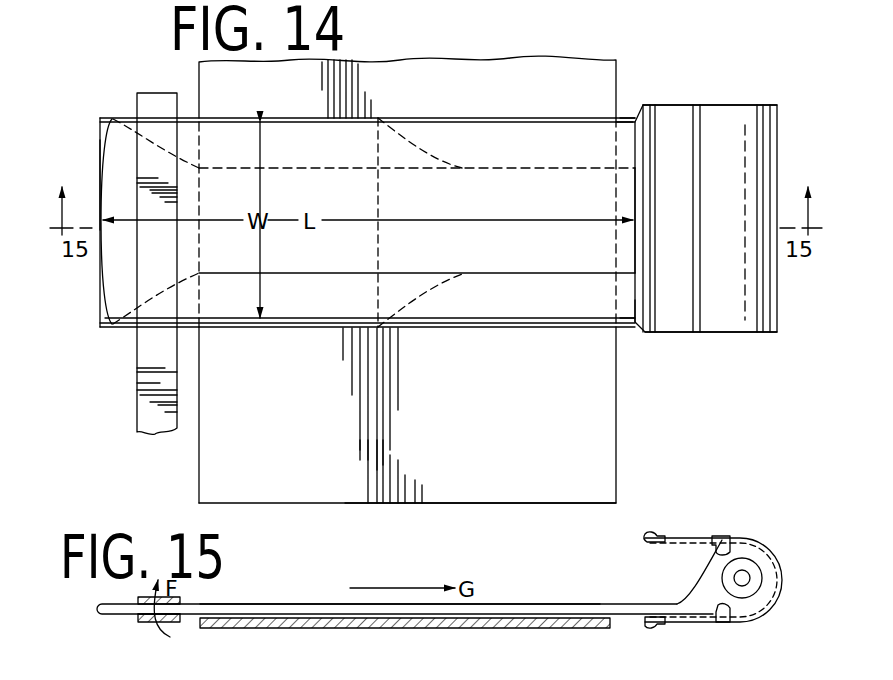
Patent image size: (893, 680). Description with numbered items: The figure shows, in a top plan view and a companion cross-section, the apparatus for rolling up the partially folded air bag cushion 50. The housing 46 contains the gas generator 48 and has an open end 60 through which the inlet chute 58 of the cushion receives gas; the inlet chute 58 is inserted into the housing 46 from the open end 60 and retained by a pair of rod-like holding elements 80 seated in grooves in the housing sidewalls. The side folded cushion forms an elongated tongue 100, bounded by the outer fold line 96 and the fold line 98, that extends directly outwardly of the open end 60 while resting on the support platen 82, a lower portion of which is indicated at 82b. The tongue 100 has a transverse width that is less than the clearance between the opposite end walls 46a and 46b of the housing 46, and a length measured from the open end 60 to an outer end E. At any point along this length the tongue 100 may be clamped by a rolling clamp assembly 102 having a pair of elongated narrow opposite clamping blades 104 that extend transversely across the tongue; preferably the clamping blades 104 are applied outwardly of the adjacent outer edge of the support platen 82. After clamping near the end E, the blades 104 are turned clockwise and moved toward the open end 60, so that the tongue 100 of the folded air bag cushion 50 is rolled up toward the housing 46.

In FIG. 14, the housing 46 is at (778, 135).
In FIG. 15, the housing 46 is at (776, 558).
In FIG. 14, the end wall of housing 46a is at (712, 105).
In FIG. 14, the end wall of housing 46b is at (730, 333).
In FIG. 15, the gas generator 48 is at (762, 580).
In FIG. 14, the air bag cushion 50 is at (540, 337).
In FIG. 15, the air bag cushion 50 is at (507, 600).
In FIG. 14, the inlet chute 58 is at (636, 122).
In FIG. 15, the inlet chute 58 is at (700, 585).
In FIG. 14, the open end of housing 60 is at (625, 324).
In FIG. 15, the open end of housing 60 is at (648, 535).
In FIG. 15, the rod-like holding elements 80 is at (720, 536).
In FIG. 14, the support platen 82 is at (199, 448).
In FIG. 15, the support platen 82 is at (398, 629).
In FIG. 14, the panel bottom edge 82b is at (343, 503).
In FIG. 14, the outer fold line 96 is at (473, 118).
In FIG. 14, the fold line 98 is at (452, 328).
In FIG. 14, the tongue 100 is at (99, 190).
In FIG. 15, the tongue 100 is at (93, 610).
In FIG. 14, the rolling clamp assembly 102 is at (139, 372).
In FIG. 15, the rolling clamp assembly 102 is at (136, 620).
In FIG. 14, the clamping blades 104 is at (174, 366).
In FIG. 15, the clamping blades 104 is at (180, 600).
In FIG. 14, the outer end of tongue E is at (100, 273).